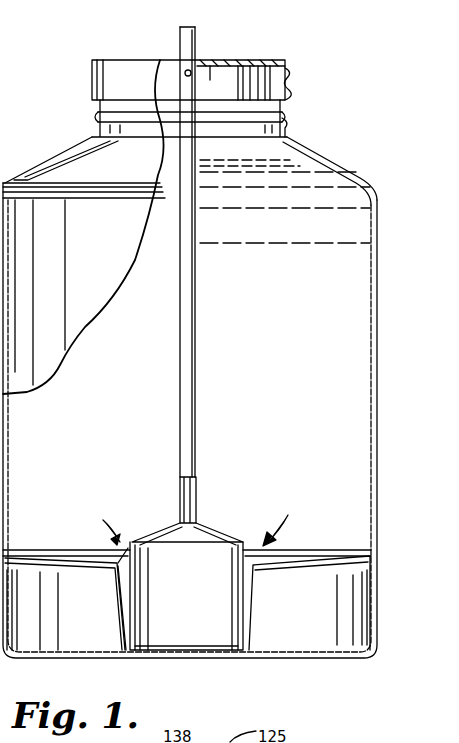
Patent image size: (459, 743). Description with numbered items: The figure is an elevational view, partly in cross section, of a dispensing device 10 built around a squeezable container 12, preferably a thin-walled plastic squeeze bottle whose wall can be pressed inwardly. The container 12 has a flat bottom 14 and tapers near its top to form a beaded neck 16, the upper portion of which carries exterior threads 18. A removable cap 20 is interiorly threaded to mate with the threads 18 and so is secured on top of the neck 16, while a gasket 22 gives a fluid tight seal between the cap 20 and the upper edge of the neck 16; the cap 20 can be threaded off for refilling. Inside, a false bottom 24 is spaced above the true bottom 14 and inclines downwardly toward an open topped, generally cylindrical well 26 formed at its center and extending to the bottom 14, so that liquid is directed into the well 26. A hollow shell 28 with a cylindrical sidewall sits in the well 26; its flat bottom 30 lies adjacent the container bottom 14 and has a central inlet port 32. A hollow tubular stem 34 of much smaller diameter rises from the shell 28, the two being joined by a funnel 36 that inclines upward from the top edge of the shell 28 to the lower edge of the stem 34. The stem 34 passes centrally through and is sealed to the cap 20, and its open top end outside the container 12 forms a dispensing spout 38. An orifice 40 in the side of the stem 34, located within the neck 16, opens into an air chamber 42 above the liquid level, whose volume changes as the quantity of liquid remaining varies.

The dispensing device 10 is at (366, 170).
The squeezable container 12 is at (378, 310).
The flat bottom 14 is at (292, 657).
The beaded neck 16 is at (300, 128).
The threads 18 is at (291, 92).
The removable cap 20 is at (103, 82).
The gasket 22 is at (248, 70).
The false bottom 24 is at (76, 560).
The well 26 is at (243, 585).
The hollow shell 28 is at (130, 602).
The flat bottom 30 is at (212, 652).
The inlet port 32 is at (190, 655).
The hollow tubular stem 34 is at (192, 343).
The funnel 36 is at (211, 530).
The dispensing spout 38 is at (197, 27).
The orifice 40 is at (191, 70).
The air chamber 42 is at (285, 191).